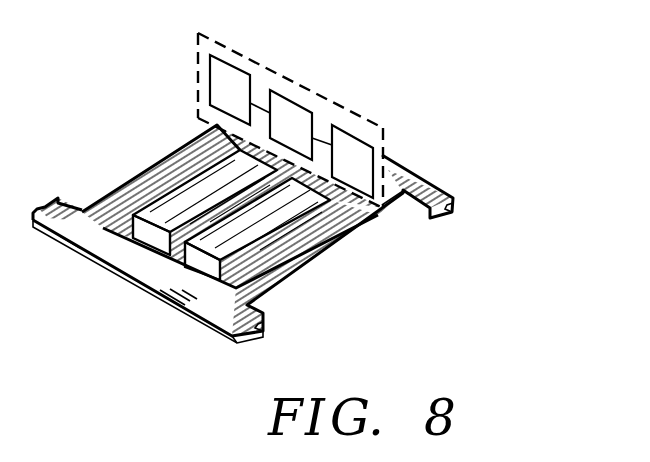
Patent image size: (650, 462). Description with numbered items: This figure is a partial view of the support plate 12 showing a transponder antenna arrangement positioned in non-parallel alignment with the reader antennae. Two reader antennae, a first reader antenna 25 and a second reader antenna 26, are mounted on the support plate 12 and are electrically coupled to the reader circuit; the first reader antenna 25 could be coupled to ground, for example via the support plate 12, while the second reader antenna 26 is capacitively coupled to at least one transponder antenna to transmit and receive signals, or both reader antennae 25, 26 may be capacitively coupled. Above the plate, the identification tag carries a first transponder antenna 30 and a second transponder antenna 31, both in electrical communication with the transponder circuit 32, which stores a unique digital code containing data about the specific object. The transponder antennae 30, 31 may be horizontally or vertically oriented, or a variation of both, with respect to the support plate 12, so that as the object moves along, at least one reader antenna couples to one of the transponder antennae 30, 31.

The support plate 12 is at (422, 183).
The first reader antenna 25 is at (200, 187).
The second reader antenna 26 is at (270, 231).
The first transponder antenna 30 is at (220, 78).
The second transponder antenna 31 is at (356, 153).
The transponder circuit 32 is at (293, 112).